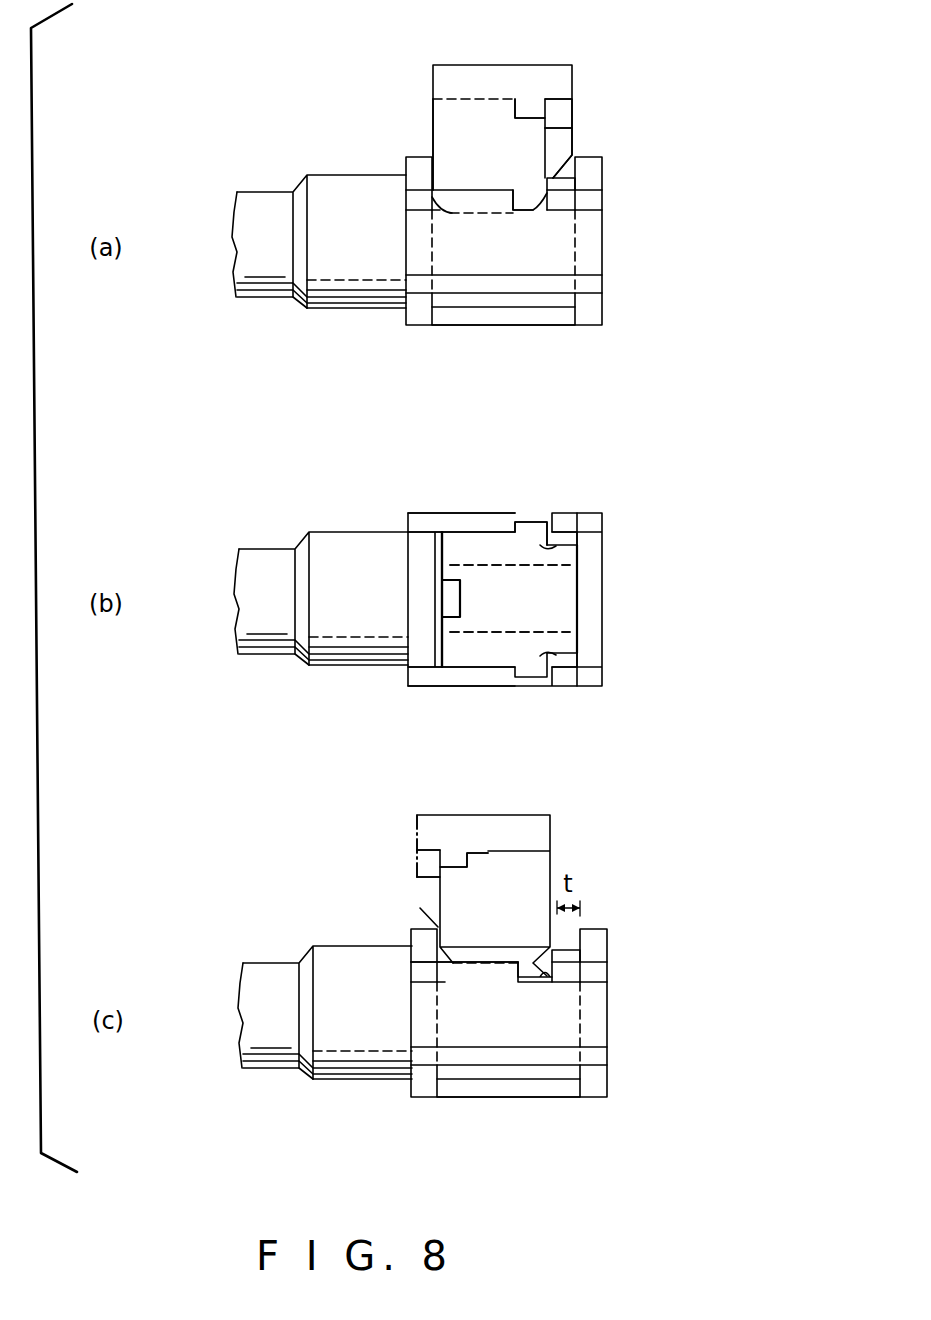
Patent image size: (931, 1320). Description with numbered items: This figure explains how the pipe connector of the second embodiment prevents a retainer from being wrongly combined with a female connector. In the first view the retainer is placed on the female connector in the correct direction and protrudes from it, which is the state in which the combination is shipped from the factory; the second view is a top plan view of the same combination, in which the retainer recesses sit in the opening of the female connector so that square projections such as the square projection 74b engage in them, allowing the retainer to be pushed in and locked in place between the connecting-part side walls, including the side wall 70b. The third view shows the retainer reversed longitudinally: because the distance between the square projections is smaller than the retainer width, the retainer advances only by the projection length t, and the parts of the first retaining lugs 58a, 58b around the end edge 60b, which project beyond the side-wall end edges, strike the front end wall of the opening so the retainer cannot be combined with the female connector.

The first retaining lug 58a is at (562, 150).
The first retaining lug 58b is at (423, 890).
The end edge 60b is at (417, 893).
The side wall 70b is at (472, 518).
The square projection 74b is at (570, 538).